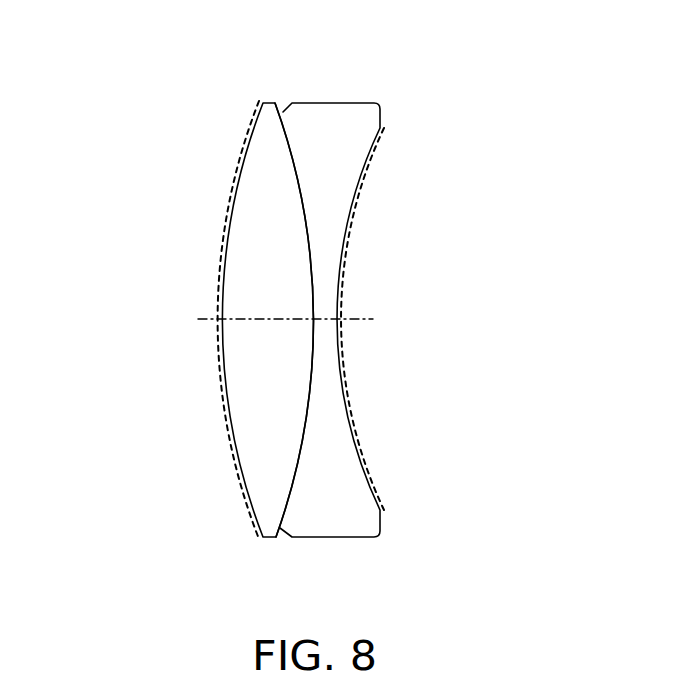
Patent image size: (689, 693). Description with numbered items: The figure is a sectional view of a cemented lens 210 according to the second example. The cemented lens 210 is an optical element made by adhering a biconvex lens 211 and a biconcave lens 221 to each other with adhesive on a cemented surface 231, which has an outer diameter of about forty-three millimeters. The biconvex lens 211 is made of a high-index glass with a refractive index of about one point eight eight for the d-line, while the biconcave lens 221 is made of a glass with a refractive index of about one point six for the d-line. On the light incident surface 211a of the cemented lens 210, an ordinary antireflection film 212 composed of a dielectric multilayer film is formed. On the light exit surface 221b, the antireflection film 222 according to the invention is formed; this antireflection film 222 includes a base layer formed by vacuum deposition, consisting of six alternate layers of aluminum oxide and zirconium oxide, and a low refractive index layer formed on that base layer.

The cemented lens 210 is at (295, 320).
The biconvex lens 211 is at (268, 125).
The biconcave lens 221 is at (333, 123).
The cemented surface 231 is at (312, 195).
The light incident surface 211a is at (223, 247).
The light exit surface 221b is at (345, 243).
The antireflection film 212 is at (223, 413).
The antireflection film 222 is at (412, 414).